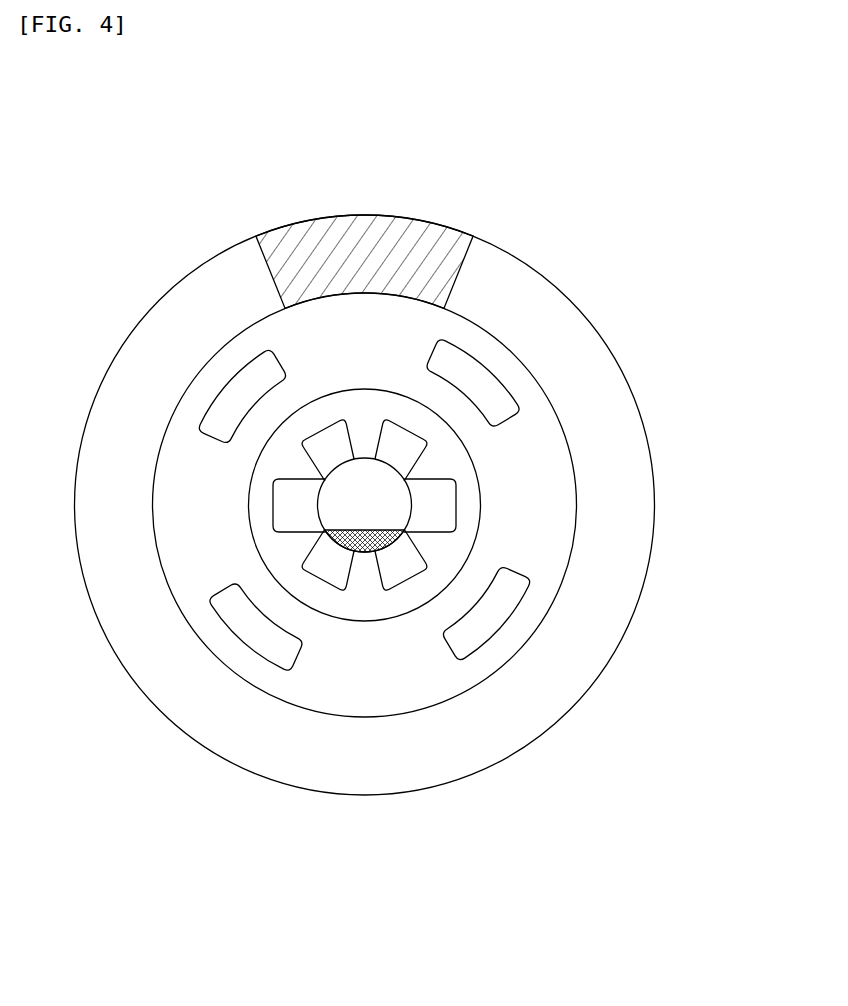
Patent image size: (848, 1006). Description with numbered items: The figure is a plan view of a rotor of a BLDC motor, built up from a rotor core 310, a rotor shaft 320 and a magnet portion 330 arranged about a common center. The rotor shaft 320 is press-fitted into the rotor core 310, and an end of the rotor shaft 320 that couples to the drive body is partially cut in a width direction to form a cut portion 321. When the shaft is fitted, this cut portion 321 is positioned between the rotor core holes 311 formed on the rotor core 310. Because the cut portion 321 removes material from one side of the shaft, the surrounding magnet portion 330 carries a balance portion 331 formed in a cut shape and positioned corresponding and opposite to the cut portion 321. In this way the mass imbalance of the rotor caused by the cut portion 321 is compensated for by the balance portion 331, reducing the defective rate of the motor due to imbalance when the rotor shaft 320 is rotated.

The rotor core 310 is at (493, 648).
The rotor core holes 311 is at (490, 615).
The rotor shaft 320 is at (382, 490).
The cut portion 321 is at (383, 528).
The magnet portion 330 is at (557, 327).
The balance portion 331 is at (366, 263).